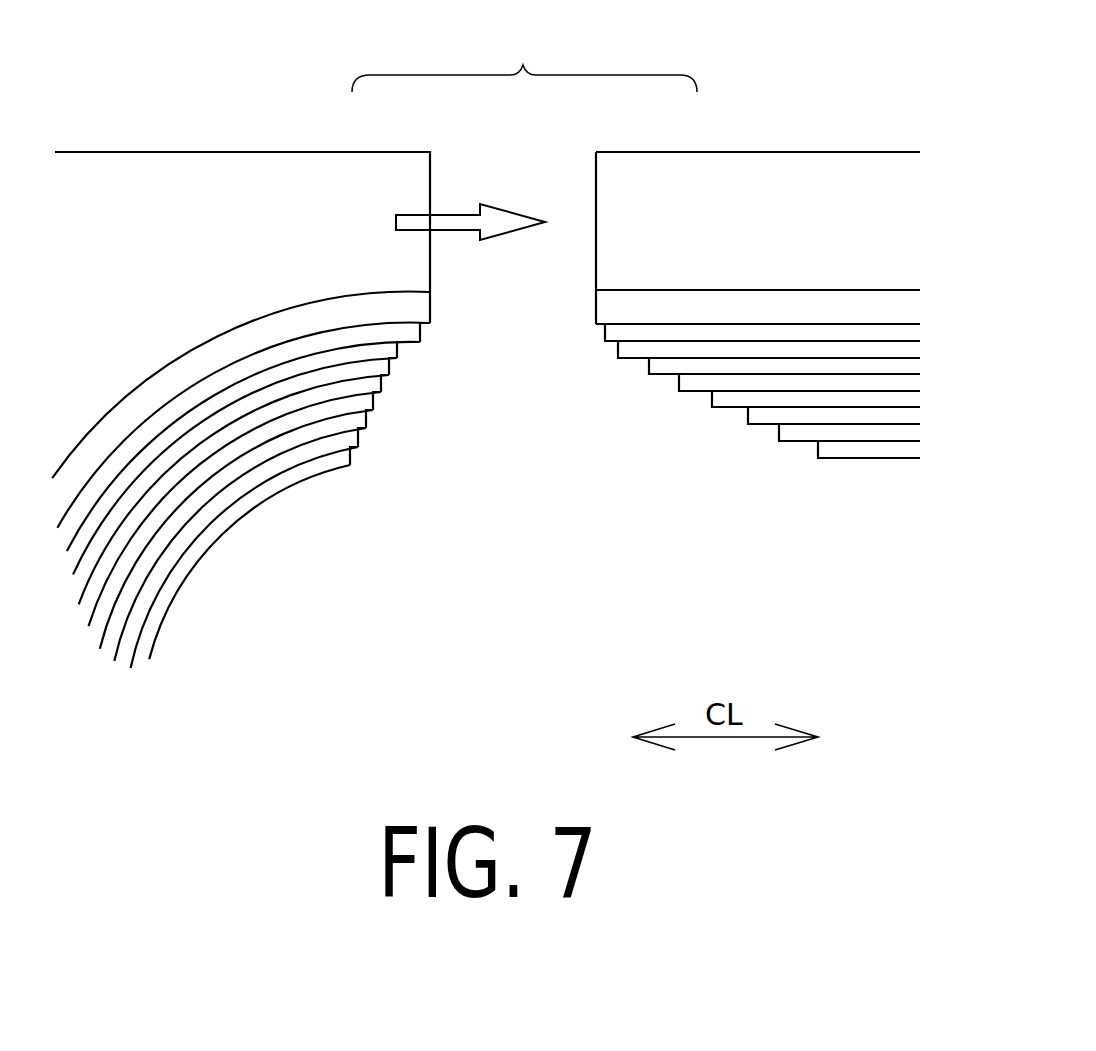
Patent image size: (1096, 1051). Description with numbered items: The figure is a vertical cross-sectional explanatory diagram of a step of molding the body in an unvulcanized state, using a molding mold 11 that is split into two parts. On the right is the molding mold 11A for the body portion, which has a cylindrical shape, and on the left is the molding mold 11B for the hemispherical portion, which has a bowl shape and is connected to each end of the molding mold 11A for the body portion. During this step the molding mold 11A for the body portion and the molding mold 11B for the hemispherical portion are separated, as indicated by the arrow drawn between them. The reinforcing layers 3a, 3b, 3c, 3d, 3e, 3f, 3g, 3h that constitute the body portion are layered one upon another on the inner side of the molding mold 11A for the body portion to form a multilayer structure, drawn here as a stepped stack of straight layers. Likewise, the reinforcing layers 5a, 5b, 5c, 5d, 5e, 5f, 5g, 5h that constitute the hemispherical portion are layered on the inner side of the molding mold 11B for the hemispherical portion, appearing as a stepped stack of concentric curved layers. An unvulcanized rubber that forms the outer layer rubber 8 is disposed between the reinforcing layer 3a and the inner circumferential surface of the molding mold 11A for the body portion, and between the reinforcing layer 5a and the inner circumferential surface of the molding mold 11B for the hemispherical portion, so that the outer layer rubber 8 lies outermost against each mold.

The molding mold 11 is at (523, 65).
The molding mold for the body portion 11A is at (625, 163).
The molding mold for the hemispherical portion 11B is at (360, 165).
The outer layer rubber 8 is at (213, 355).
The reinforcing layer 5a is at (412, 337).
The reinforcing layer 5b is at (377, 348).
The reinforcing layer 5c is at (353, 372).
The reinforcing layer 5d is at (320, 395).
The reinforcing layer 5e is at (278, 428).
The reinforcing layer 5f is at (242, 470).
The reinforcing layer 5g is at (208, 512).
The reinforcing layer 5h is at (190, 565).
The reinforcing layer 3a is at (605, 332).
The reinforcing layer 3b is at (618, 350).
The reinforcing layer 3c is at (648, 368).
The reinforcing layer 3d is at (680, 388).
The reinforcing layer 3e is at (713, 410).
The reinforcing layer 3f is at (760, 418).
The reinforcing layer 3g is at (793, 437).
The reinforcing layer 3h is at (853, 453).